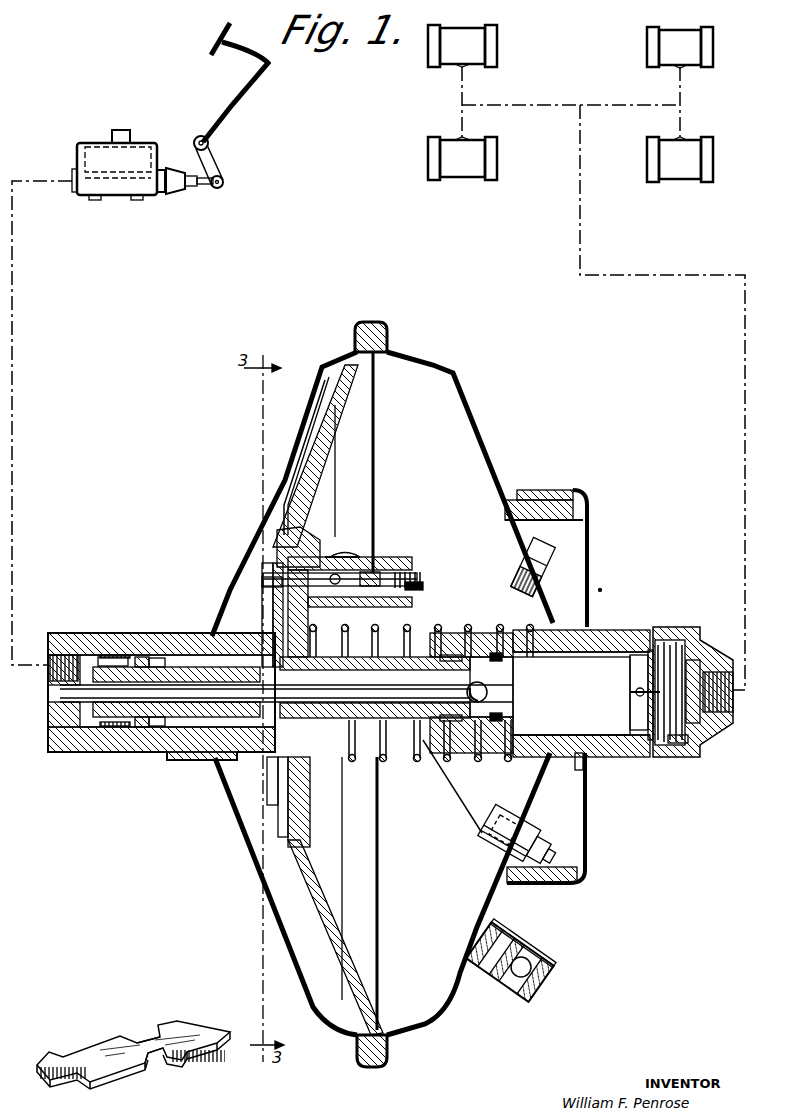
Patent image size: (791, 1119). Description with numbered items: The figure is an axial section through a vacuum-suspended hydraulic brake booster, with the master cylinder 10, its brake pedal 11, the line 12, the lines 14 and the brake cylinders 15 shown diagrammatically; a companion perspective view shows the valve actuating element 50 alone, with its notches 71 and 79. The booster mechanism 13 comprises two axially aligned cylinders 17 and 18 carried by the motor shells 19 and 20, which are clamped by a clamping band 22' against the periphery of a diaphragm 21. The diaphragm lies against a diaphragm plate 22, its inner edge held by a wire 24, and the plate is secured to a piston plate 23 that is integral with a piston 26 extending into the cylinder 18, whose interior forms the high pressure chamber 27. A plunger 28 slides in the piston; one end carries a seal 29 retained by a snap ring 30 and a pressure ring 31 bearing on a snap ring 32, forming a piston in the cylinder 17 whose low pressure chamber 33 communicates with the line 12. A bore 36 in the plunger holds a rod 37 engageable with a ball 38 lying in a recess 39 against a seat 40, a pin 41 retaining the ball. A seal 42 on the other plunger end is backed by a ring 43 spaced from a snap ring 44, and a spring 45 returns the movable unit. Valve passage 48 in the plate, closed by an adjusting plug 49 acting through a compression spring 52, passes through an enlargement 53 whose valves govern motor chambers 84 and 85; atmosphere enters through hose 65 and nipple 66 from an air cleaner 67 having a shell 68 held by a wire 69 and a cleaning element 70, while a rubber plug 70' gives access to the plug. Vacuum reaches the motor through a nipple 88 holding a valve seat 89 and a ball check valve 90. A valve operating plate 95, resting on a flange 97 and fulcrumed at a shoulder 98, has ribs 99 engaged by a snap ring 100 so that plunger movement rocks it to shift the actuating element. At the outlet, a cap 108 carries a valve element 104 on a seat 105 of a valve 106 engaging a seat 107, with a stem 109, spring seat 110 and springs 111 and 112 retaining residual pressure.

In FIG. 1, the master cylinder 10 is at (95, 142).
In FIG. 1, the brake pedal 11 is at (275, 64).
In FIG. 1, the line 12 is at (27, 298).
In FIG. 1, the booster mechanism 13 is at (250, 532).
In FIG. 1, the lines 14 is at (632, 275).
In FIG. 1, the brake cylinders 15 is at (470, 33).
In FIG. 1, the cylinder 17 is at (125, 633).
In FIG. 1, the cylinder 18 is at (609, 632).
In FIG. 1, the shell 19 is at (318, 366).
In FIG. 1, the shell 20 is at (446, 368).
In FIG. 1, the diaphragm 21 is at (366, 390).
In FIG. 1, the diaphragm plate 22 is at (352, 691).
In FIG. 1, the clamping band 22' is at (384, 676).
In FIG. 1, the piston plate 23 is at (312, 542).
In FIG. 1, the wire 24 is at (280, 535).
In FIG. 1, the piston 26 is at (378, 758).
In FIG. 1, the high pressure chamber 27 is at (571, 696).
In FIG. 1, the plunger 28 is at (180, 712).
In FIG. 1, the seal 29 is at (100, 640).
In FIG. 1, the snap ring 30 is at (87, 660).
In FIG. 1, the pressure ring 31 is at (146, 658).
In FIG. 1, the snap ring 32 is at (190, 655).
In FIG. 1, the low pressure chamber 33 is at (90, 730).
In FIG. 1, the bore 36 is at (212, 705).
In FIG. 1, the rod 37 is at (205, 688).
In FIG. 1, the ball 38 is at (414, 687).
In FIG. 1, the recess 39 is at (490, 684).
In FIG. 1, the seat 40 is at (455, 660).
In FIG. 1, the pin 41 is at (520, 692).
In FIG. 1, the seal 42 is at (487, 655).
In FIG. 1, the ring 43 is at (510, 650).
In FIG. 1, the snap ring 44 is at (433, 762).
In FIG. 1, the spring 45 is at (410, 626).
In FIG. 1, the passage 48 is at (360, 640).
In FIG. 1, the adjusting plug 49 is at (420, 571).
In FIG. 1, the valve actuating element 50 is at (266, 562).
In FIG. 2, the valve actuating element 50 is at (82, 1062).
In FIG. 1, the compression spring 52 is at (370, 568).
In FIG. 1, the enlargement 53 is at (378, 556).
In FIG. 1, the hose 65 is at (470, 817).
In FIG. 1, the nipple 66 is at (540, 830).
In FIG. 1, the air cleaner 67 is at (585, 885).
In FIG. 1, the shell 68 is at (590, 855).
In FIG. 1, the wire 69 is at (600, 620).
In FIG. 1, the cleaning element 70 is at (556, 554).
In FIG. 1, the rubber plug 70' is at (569, 564).
In FIG. 2, the notch 71 is at (140, 1036).
In FIG. 1, the notch 79 is at (345, 540).
In FIG. 2, the notch 79 is at (163, 1068).
In FIG. 1, the motor chamber 84 is at (457, 442).
In FIG. 1, the motor chamber 85 is at (312, 416).
In FIG. 1, the nipple 88 is at (548, 955).
In FIG. 1, the valve seat 89 is at (516, 944).
In FIG. 1, the ball check valve 90 is at (512, 992).
In FIG. 1, the valve operating plate 95 is at (262, 585).
In FIG. 1, the flange 97 is at (264, 797).
In FIG. 1, the shoulder 98 is at (306, 772).
In FIG. 1, the ribs 99 is at (280, 752).
In FIG. 1, the snap ring 100 is at (250, 625).
In FIG. 1, the valve element 104 is at (716, 660).
In FIG. 1, the seat 105 is at (676, 746).
In FIG. 1, the valve 106 is at (676, 640).
In FIG. 1, the seat 107 is at (697, 645).
In FIG. 1, the cap 108 is at (733, 705).
In FIG. 1, the stem 109 is at (630, 692).
In FIG. 1, the spring seat 110 is at (636, 699).
In FIG. 1, the spring 111 is at (645, 668).
In FIG. 1, the spring 112 is at (643, 648).